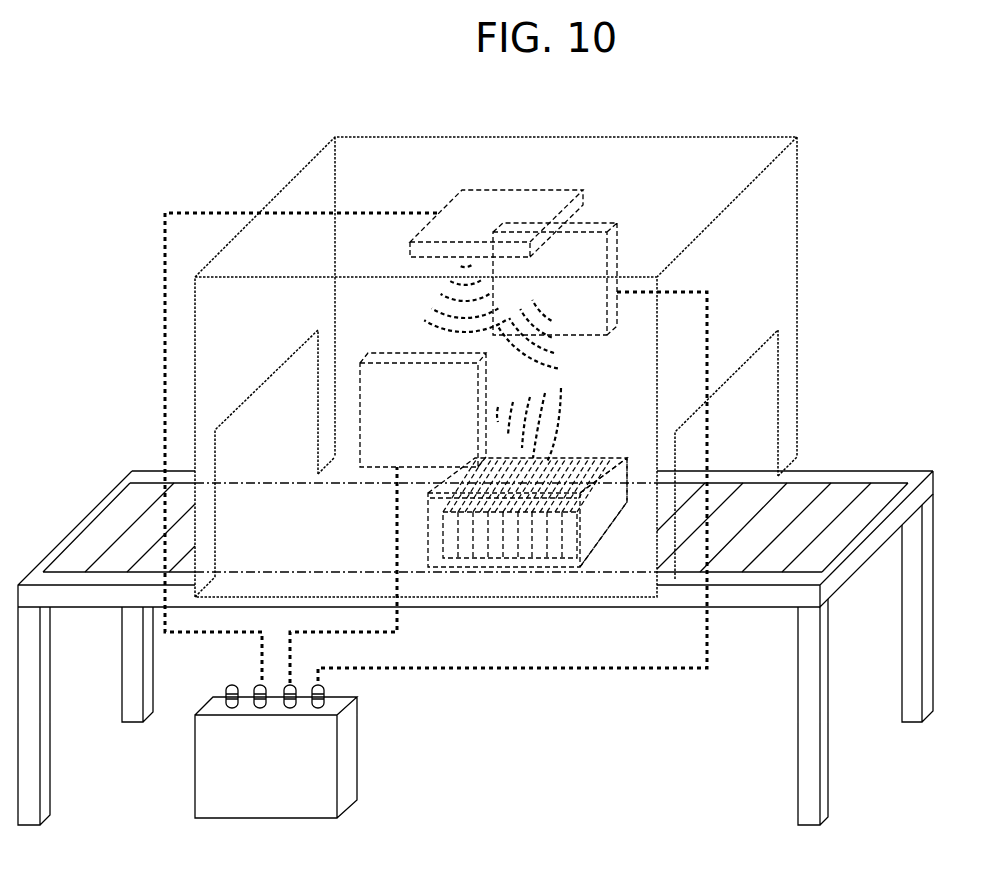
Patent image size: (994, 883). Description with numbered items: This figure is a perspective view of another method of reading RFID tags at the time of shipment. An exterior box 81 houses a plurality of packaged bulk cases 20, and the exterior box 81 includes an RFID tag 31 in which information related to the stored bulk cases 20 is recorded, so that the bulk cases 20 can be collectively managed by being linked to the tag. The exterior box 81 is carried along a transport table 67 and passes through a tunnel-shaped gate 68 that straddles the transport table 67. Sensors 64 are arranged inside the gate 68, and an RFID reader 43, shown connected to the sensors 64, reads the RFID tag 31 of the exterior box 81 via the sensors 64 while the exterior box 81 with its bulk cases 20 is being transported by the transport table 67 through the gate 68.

The gate 68 is at (312, 188).
The sensor 64 is at (383, 356).
The transport table 67 is at (858, 470).
The RFID tag 31 is at (432, 500).
The bulk cases 20 is at (517, 560).
The exterior box 81 is at (607, 533).
The RFID reader 43 is at (275, 795).